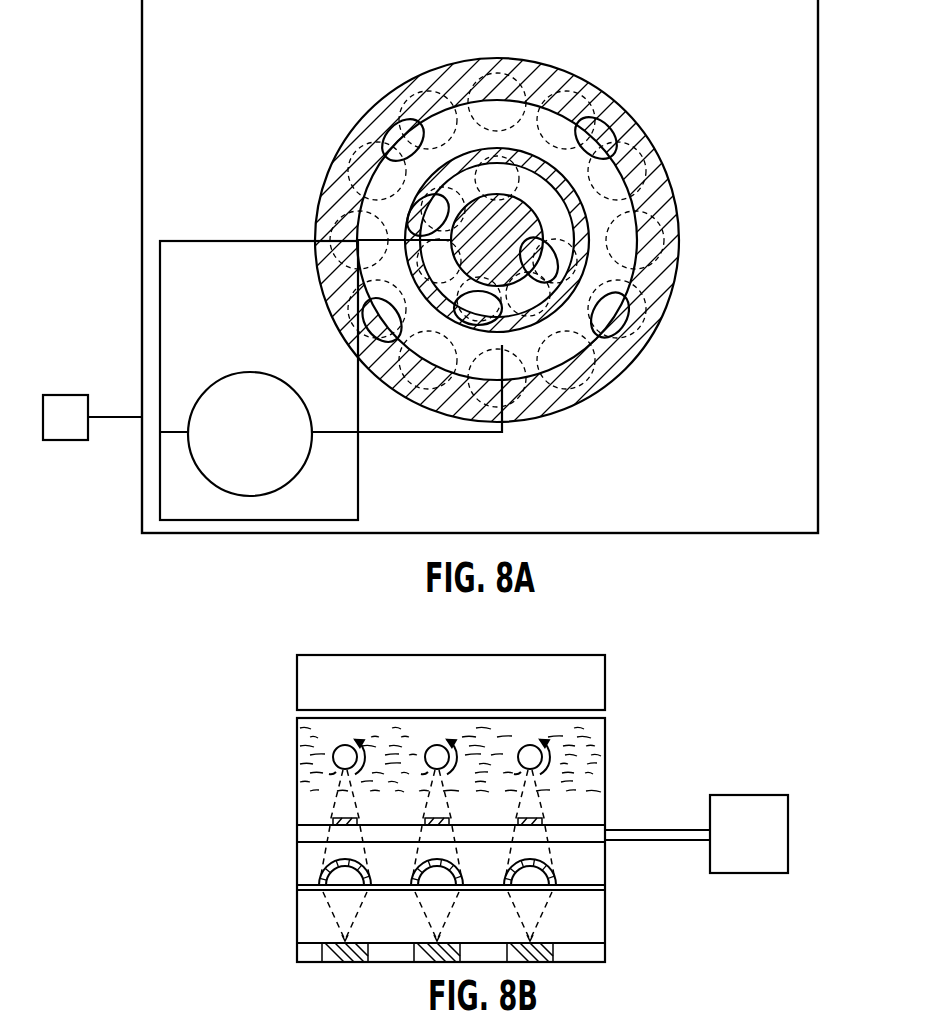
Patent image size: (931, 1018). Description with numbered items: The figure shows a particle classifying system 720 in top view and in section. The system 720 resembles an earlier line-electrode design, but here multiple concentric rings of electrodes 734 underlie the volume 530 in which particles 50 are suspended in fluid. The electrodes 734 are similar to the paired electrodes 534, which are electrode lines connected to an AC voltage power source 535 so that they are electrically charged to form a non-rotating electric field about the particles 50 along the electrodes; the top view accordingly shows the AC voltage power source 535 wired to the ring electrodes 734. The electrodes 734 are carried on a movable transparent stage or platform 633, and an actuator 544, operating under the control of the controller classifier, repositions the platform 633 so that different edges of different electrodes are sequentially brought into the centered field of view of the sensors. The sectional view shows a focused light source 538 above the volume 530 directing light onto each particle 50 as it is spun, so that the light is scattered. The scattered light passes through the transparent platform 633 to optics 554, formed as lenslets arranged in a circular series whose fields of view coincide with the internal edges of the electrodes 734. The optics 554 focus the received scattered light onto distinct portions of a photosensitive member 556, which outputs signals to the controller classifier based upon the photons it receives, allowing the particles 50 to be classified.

In FIG. 8A, the particle classifying system 720 is at (106, 89).
In FIG. 8B, the particle classifying system 720 is at (250, 794).
In FIG. 8A, the particle 50 is at (407, 123).
In FIG. 8B, the particle 50 is at (345, 745).
In FIG. 8A, the volume 530 is at (535, 108).
In FIG. 8B, the volume 530 is at (310, 730).
In FIG. 8B, the electrodes 534 is at (606, 895).
In FIG. 8A, the AC voltage power source 535 is at (230, 372).
In FIG. 8B, the focused light source 538 is at (606, 680).
In FIG. 8A, the actuator 544 is at (62, 395).
In FIG. 8B, the actuator 544 is at (770, 795).
In FIG. 8A, the optics 554 is at (363, 143).
In FIG. 8B, the optics 554 is at (320, 875).
In FIG. 8B, the photosensitive member 556 is at (310, 950).
In FIG. 8A, the movable transparent stage or platform 633 is at (818, 497).
In FIG. 8B, the movable transparent stage or platform 633 is at (606, 830).
In FIG. 8A, the concentric ring electrodes 734 is at (622, 186).
In FIG. 8B, the concentric ring electrodes 734 is at (360, 822).